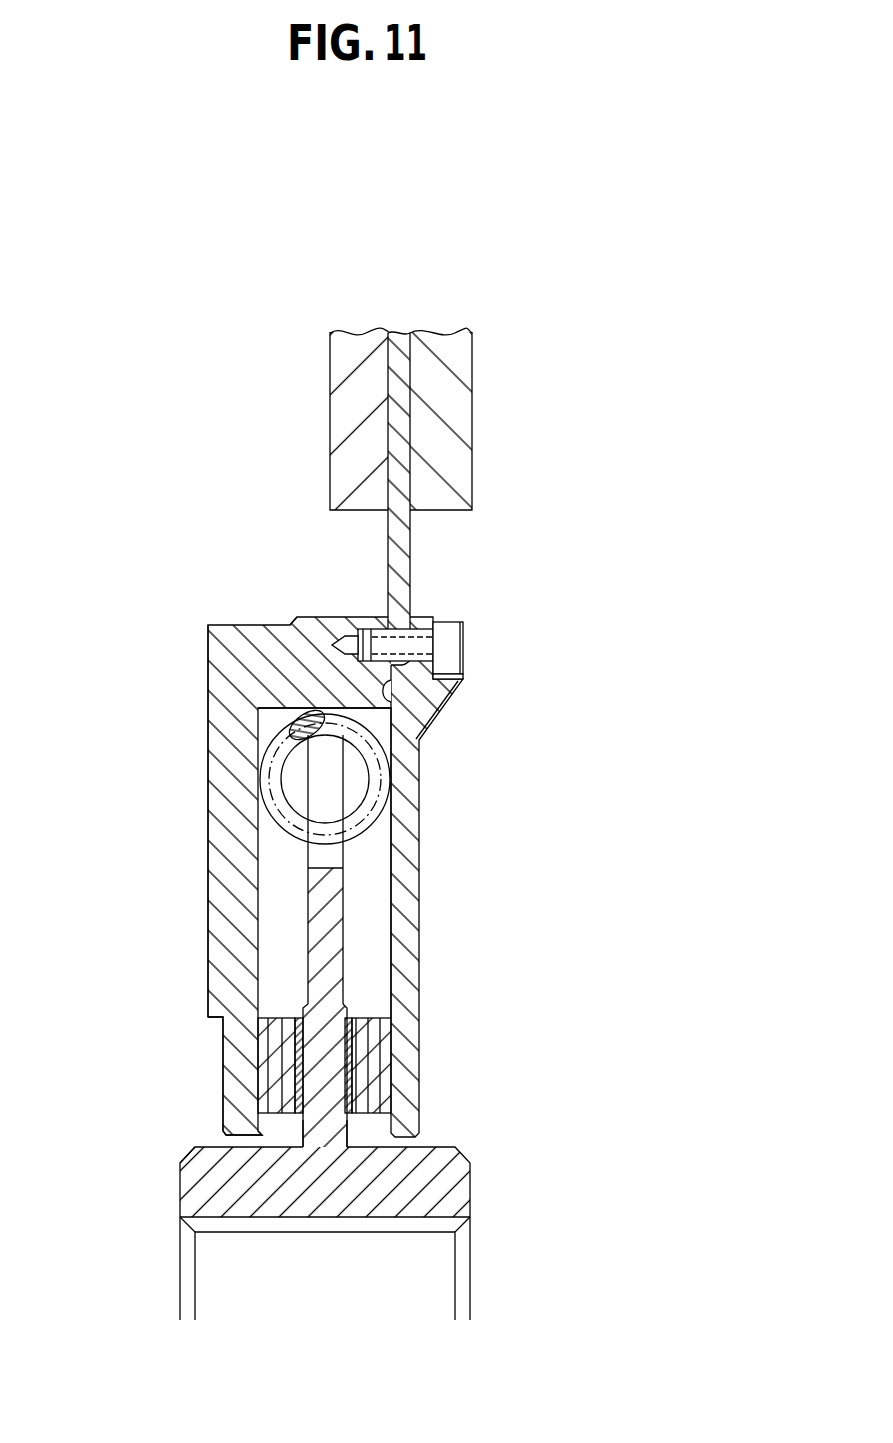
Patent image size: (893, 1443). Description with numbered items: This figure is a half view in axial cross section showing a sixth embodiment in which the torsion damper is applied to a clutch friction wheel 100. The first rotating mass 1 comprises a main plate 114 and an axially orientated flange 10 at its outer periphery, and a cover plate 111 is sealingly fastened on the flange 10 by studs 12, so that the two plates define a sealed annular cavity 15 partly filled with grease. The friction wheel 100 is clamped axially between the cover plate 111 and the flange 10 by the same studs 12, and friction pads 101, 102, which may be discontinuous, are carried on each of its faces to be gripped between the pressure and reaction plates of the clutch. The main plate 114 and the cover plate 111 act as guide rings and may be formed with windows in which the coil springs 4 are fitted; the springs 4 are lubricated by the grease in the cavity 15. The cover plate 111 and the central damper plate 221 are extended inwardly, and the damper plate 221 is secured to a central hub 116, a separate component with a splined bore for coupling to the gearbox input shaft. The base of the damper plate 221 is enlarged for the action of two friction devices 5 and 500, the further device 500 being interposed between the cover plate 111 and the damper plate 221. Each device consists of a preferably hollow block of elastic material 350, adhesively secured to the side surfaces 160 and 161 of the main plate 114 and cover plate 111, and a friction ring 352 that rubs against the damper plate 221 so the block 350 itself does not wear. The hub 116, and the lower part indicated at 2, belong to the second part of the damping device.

The first rotating mass 1 is at (292, 847).
The base bracket 2 is at (308, 1228).
The coil springs 4 is at (259, 789).
The friction device 5 is at (258, 1002).
The flange 10 is at (253, 625).
The studs 12 is at (452, 637).
The sealed annular cavity 15 is at (288, 727).
The friction wheel 100 is at (412, 557).
The friction pad 101 is at (362, 390).
The friction pad 102 is at (457, 411).
The cover plate 111 is at (392, 955).
The main plate 114 is at (208, 670).
The central hub 116 is at (178, 1170).
The side surface 160 is at (265, 1075).
The side surface 161 is at (380, 1040).
The central damper plate 221 is at (308, 912).
The block of elastic material 350 is at (387, 1082).
The friction ring 352 is at (283, 1122).
The further transverse friction device 500 is at (374, 991).